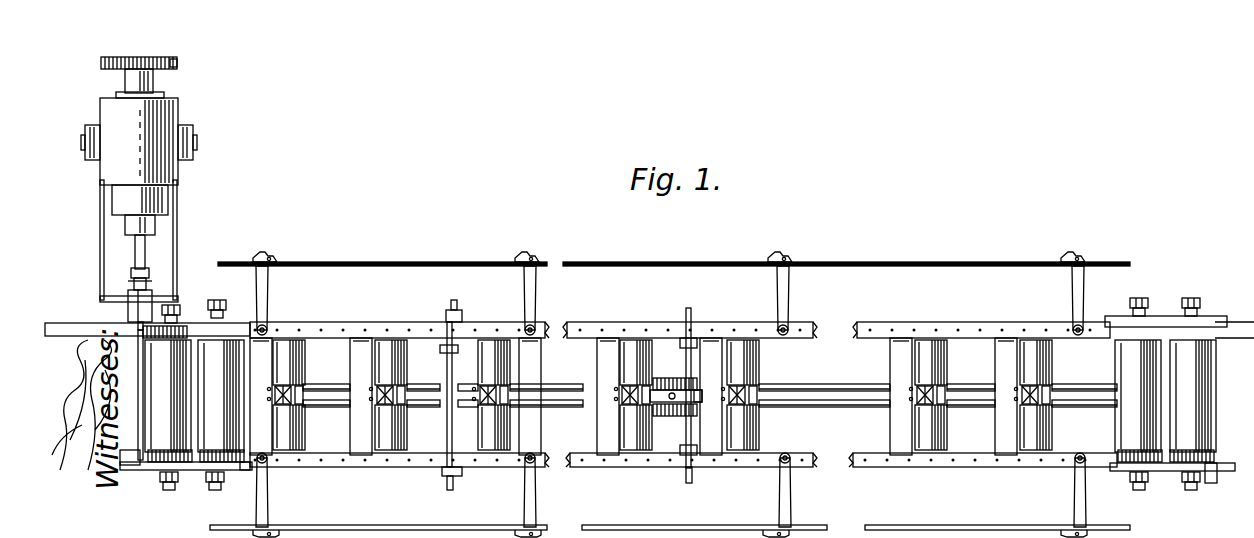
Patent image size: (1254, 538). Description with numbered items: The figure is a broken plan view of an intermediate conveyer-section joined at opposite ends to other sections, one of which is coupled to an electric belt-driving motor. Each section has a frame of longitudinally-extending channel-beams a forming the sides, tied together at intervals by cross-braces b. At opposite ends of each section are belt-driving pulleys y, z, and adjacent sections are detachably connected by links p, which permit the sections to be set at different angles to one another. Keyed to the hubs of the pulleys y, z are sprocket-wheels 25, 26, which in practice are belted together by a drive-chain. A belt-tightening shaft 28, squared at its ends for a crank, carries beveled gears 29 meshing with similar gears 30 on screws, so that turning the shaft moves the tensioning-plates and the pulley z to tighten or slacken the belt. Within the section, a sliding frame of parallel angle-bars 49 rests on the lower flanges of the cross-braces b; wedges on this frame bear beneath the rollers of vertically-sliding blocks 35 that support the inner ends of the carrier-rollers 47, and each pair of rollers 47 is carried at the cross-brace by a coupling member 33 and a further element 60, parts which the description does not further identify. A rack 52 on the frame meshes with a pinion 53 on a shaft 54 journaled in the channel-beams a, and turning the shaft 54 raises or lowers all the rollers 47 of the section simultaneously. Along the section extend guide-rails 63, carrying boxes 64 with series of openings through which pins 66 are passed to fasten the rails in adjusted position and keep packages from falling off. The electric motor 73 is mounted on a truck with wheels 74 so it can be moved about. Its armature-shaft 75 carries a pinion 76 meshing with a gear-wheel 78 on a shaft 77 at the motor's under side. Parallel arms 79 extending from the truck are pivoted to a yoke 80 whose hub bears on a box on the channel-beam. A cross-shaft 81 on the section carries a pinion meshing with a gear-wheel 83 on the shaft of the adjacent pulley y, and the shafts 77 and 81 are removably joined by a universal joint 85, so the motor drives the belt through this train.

The sprocket-wheel 25 is at (1128, 462).
The sprocket-wheel 26 is at (265, 470).
The belt-tightening shaft 28 is at (460, 313).
The beveled gears 29 is at (452, 352).
The beveled gears 30 is at (446, 468).
The coupling spider 33 is at (638, 396).
The vertically-sliding block 35 is at (405, 392).
The carrier-rollers 47 is at (388, 350).
The angle-bars 49 is at (566, 402).
The rack 52 is at (672, 385).
The pinion 53 is at (702, 382).
The shaft 54 is at (690, 478).
The hanger arm 60 is at (527, 497).
The guide-rails 63 is at (838, 262).
The boxes 64 is at (540, 262).
The pins 66 is at (520, 256).
The electric motor 73 is at (162, 165).
The wheels 74 is at (90, 130).
The armature-shaft 75 is at (152, 73).
The pinion 76 is at (139, 46).
The shaft 77 is at (137, 252).
The gear-wheel 78 is at (175, 61).
The arms 79 is at (100, 258).
The yoke 80 is at (118, 297).
The cross-shaft 81 is at (135, 440).
The gear-wheel 83 is at (240, 318).
The universal joint 85 is at (137, 280).
The channel-beams a is at (62, 330).
The cross-braces b is at (360, 458).
The links p is at (190, 320).
The belt-driving pulley y is at (1118, 365).
The belt-driving pulley z is at (1178, 415).